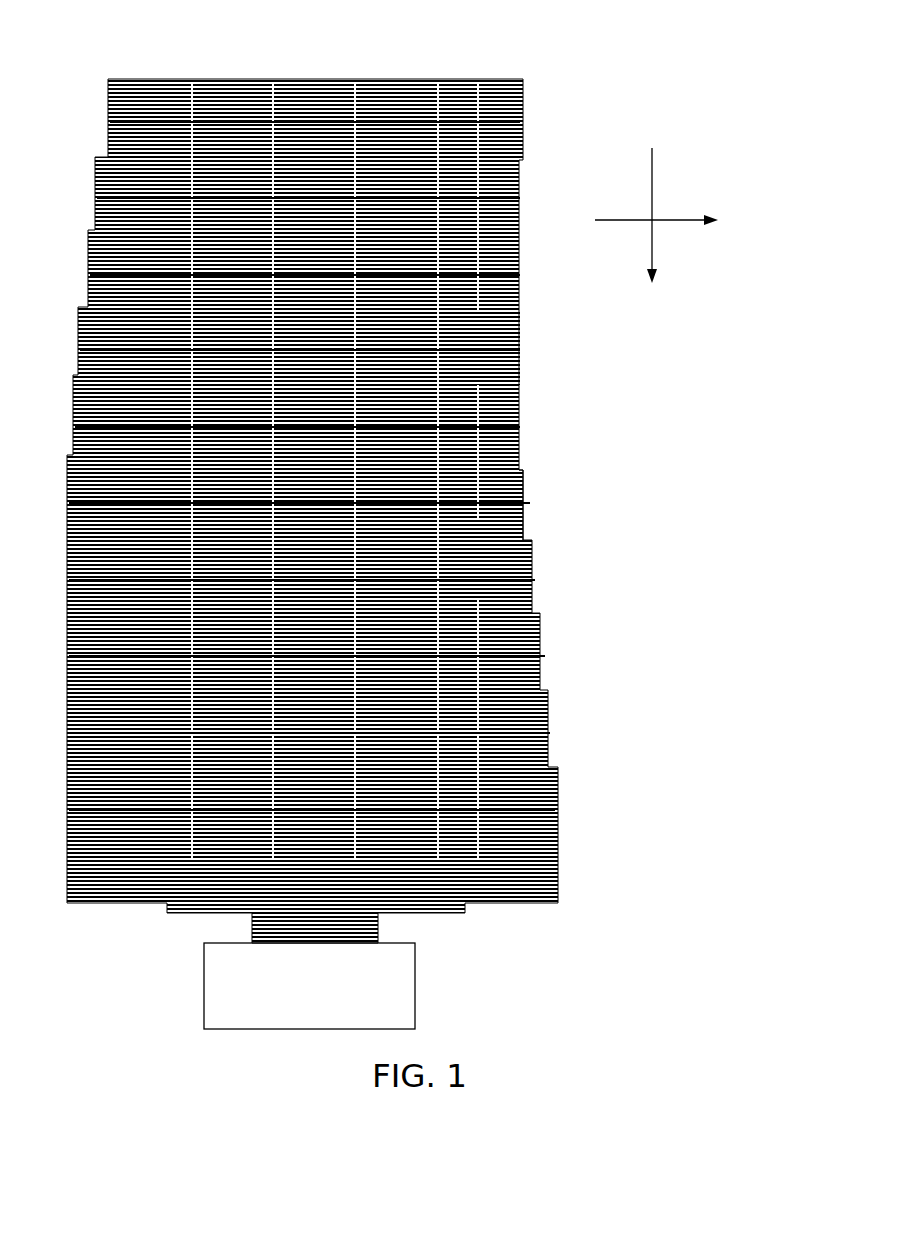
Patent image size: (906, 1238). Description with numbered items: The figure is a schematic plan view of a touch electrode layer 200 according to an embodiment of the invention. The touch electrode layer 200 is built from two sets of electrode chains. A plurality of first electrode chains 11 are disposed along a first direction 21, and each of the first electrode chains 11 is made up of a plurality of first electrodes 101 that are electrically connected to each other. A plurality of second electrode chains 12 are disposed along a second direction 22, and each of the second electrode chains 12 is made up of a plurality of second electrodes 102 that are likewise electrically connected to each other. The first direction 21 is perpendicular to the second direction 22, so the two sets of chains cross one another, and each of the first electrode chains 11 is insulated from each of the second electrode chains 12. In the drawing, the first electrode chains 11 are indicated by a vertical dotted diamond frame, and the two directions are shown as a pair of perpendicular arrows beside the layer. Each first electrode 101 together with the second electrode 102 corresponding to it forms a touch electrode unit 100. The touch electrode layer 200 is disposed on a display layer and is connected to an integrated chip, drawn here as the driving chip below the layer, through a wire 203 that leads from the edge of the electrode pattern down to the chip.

The touch electrode layer 200 is at (266, 41).
The touch electrode unit 100 is at (498, 114).
The second electrode chain 12 is at (508, 347).
The first electrode chain 11 is at (172, 408).
The wire 203 is at (522, 540).
The first electrode 101 is at (485, 558).
The second electrode 102 is at (512, 590).
The first direction 21 is at (652, 160).
The second direction 22 is at (627, 220).